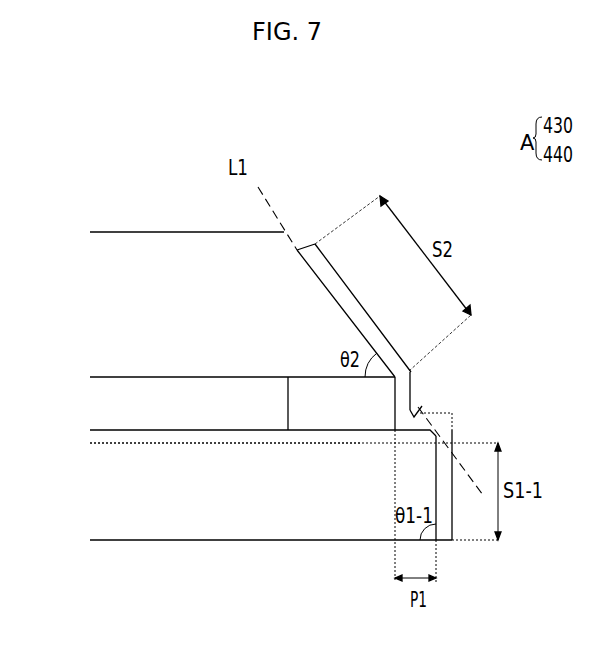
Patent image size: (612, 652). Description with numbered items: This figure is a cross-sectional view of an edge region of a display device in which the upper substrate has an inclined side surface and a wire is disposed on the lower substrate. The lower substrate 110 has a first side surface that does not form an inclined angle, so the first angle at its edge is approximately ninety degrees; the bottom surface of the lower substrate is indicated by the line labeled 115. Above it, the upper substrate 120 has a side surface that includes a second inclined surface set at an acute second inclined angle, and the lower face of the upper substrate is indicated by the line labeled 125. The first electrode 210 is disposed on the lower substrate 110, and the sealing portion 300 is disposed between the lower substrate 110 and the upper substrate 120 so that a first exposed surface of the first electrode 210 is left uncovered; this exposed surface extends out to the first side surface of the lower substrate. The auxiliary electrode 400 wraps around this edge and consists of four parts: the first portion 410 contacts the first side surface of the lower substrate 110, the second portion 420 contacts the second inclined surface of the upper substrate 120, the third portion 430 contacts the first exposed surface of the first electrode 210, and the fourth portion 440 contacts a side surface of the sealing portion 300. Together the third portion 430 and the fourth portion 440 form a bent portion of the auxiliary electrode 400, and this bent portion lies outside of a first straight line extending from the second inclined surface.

The lower substrate 110 is at (100, 494).
The bottom surface of substrate 115 is at (345, 542).
The upper substrate 120 is at (100, 311).
The upper surface of insulating layer 125 is at (100, 377).
The first electrode 210 is at (90, 431).
The sealing portion 300 is at (288, 403).
The auxiliary electrode 400 is at (542, 182).
The first portion 410 is at (452, 510).
The second portion 420 is at (352, 297).
The third portion 430 is at (421, 404).
The fourth portion 440 is at (413, 370).